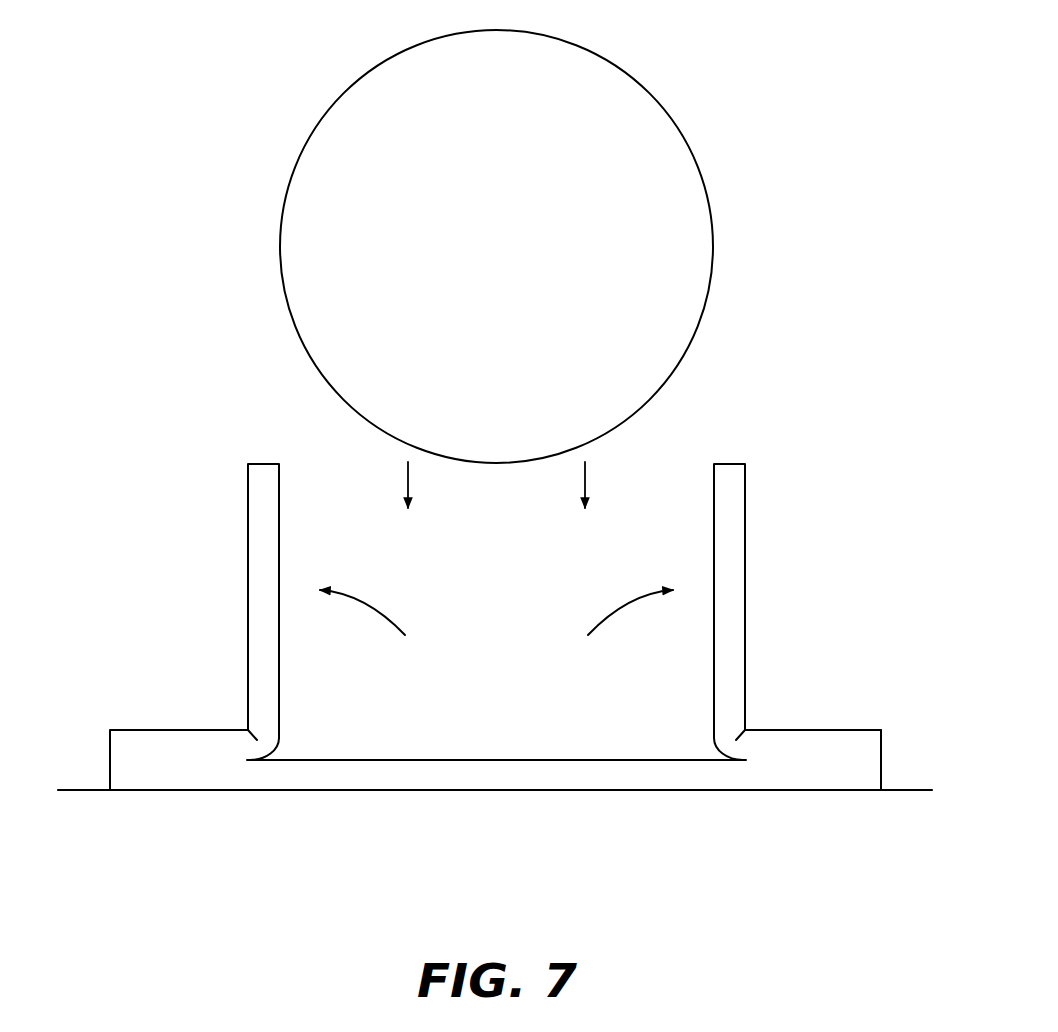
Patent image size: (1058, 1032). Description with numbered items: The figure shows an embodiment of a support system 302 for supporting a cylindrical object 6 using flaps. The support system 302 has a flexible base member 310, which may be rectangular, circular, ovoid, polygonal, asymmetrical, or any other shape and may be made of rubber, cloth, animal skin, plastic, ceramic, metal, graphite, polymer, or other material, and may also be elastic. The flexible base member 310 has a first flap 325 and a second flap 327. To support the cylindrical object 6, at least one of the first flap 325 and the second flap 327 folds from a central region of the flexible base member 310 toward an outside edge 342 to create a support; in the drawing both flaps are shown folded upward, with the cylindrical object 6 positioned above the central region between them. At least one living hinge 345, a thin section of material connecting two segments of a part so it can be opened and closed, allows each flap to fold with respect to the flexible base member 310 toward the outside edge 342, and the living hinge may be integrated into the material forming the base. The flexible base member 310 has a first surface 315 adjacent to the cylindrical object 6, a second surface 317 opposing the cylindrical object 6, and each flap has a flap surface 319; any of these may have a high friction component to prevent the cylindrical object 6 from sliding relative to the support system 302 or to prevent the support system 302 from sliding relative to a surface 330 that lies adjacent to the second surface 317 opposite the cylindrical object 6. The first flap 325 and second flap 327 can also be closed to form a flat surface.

The cylindrical object 6 is at (496, 246).
The support system 302 is at (845, 321).
The first flap 325 is at (258, 552).
The second flap 327 is at (735, 551).
The flap surface 319 is at (279, 536).
The first surface 315 is at (345, 760).
The living hinge 345 is at (239, 722).
The outside edge 342 is at (108, 755).
The flexible base member 310 is at (823, 764).
The surface 330 is at (79, 792).
The second surface 317 is at (365, 792).